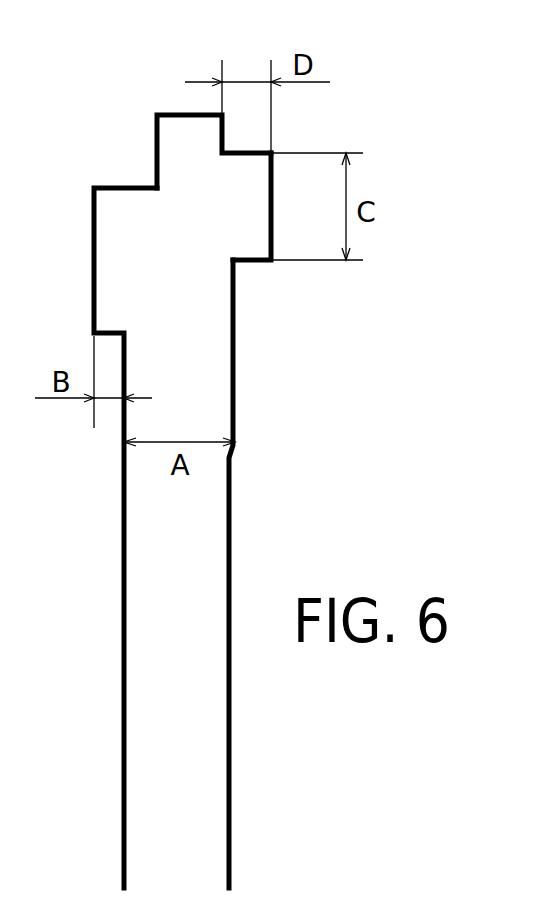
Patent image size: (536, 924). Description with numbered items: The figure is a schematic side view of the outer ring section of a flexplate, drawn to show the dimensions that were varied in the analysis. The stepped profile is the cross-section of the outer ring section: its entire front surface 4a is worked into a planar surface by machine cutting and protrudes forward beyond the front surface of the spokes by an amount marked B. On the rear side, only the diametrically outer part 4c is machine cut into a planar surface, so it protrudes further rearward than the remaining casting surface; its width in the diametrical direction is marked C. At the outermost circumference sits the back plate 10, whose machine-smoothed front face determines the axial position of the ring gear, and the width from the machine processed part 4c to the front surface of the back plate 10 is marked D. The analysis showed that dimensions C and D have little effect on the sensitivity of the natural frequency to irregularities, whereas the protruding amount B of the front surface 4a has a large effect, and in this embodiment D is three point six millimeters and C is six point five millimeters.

The back plate 10 is at (186, 128).
The front surface 4a is at (93, 258).
The machine processed part 4c is at (273, 209).